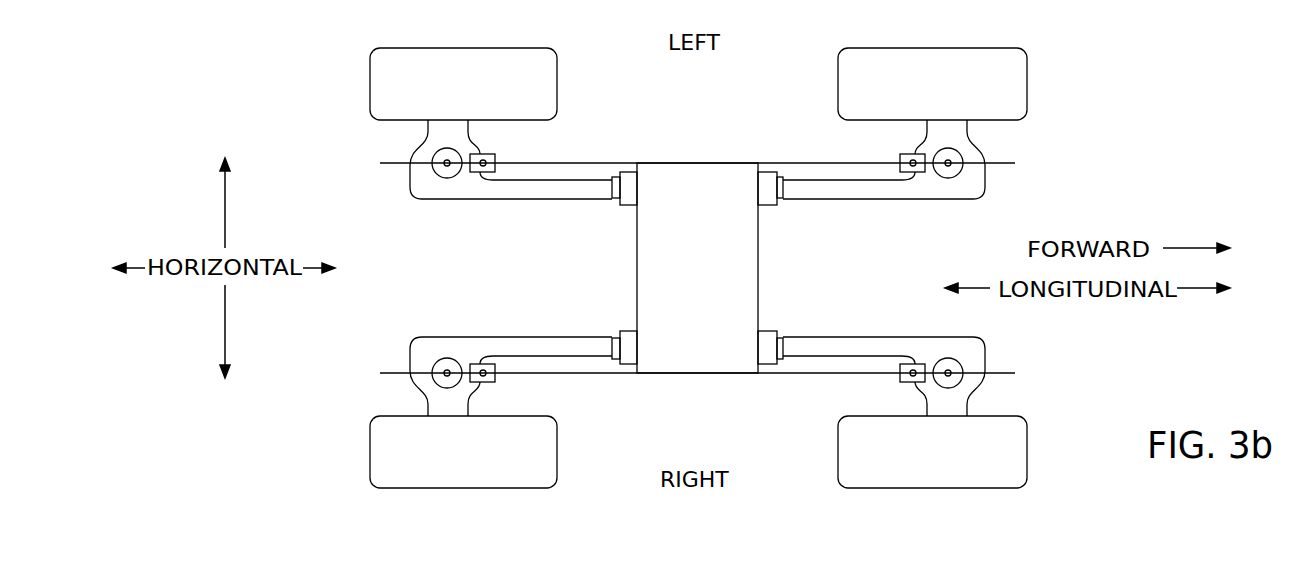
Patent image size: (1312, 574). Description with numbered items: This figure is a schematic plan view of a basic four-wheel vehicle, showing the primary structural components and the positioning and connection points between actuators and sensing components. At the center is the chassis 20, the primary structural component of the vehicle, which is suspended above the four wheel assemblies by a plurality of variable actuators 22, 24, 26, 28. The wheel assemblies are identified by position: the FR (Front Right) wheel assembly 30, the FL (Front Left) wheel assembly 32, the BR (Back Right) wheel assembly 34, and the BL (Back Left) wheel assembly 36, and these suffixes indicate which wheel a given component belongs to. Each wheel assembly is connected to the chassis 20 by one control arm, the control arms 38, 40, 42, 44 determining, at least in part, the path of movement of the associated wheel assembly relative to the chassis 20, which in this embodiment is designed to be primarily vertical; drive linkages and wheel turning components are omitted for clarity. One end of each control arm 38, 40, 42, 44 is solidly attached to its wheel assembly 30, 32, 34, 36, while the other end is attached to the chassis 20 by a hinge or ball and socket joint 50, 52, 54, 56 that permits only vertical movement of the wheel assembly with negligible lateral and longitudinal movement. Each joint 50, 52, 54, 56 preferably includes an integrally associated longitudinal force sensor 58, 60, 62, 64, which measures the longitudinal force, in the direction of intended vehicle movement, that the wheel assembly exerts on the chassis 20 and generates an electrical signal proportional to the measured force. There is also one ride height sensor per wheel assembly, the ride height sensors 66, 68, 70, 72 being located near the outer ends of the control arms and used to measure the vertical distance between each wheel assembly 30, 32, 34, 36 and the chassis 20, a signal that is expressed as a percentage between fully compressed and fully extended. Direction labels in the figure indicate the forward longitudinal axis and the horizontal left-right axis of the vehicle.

The chassis 20 is at (690, 185).
The variable actuator 22 is at (953, 365).
The variable actuator 24 is at (955, 172).
The variable actuator 26 is at (437, 365).
The variable actuator 28 is at (432, 168).
The FR (Front Right) wheel assembly 30 is at (1008, 457).
The FL (Front Left) wheel assembly 32 is at (1007, 88).
The BR (Back Right) wheel assembly 34 is at (388, 460).
The BL (Back Left) wheel assembly 36 is at (388, 94).
The control arm 38 is at (853, 345).
The control arm 40 is at (898, 188).
The control arm 42 is at (548, 348).
The control arm 44 is at (538, 188).
The ball joint or hinging unit 50 is at (780, 333).
The ball joint or hinging unit 52 is at (780, 190).
The ball joint or hinging unit 54 is at (617, 332).
The ball joint or hinging unit 56 is at (610, 190).
The longitudinal force sensor 58 is at (767, 352).
The longitudinal force sensor 60 is at (768, 172).
The longitudinal force sensor 62 is at (628, 352).
The longitudinal force sensor 64 is at (633, 167).
The ride height sensor 66 is at (918, 367).
The ride height sensor 68 is at (902, 157).
The ride height sensor 70 is at (478, 365).
The ride height sensor 72 is at (478, 172).